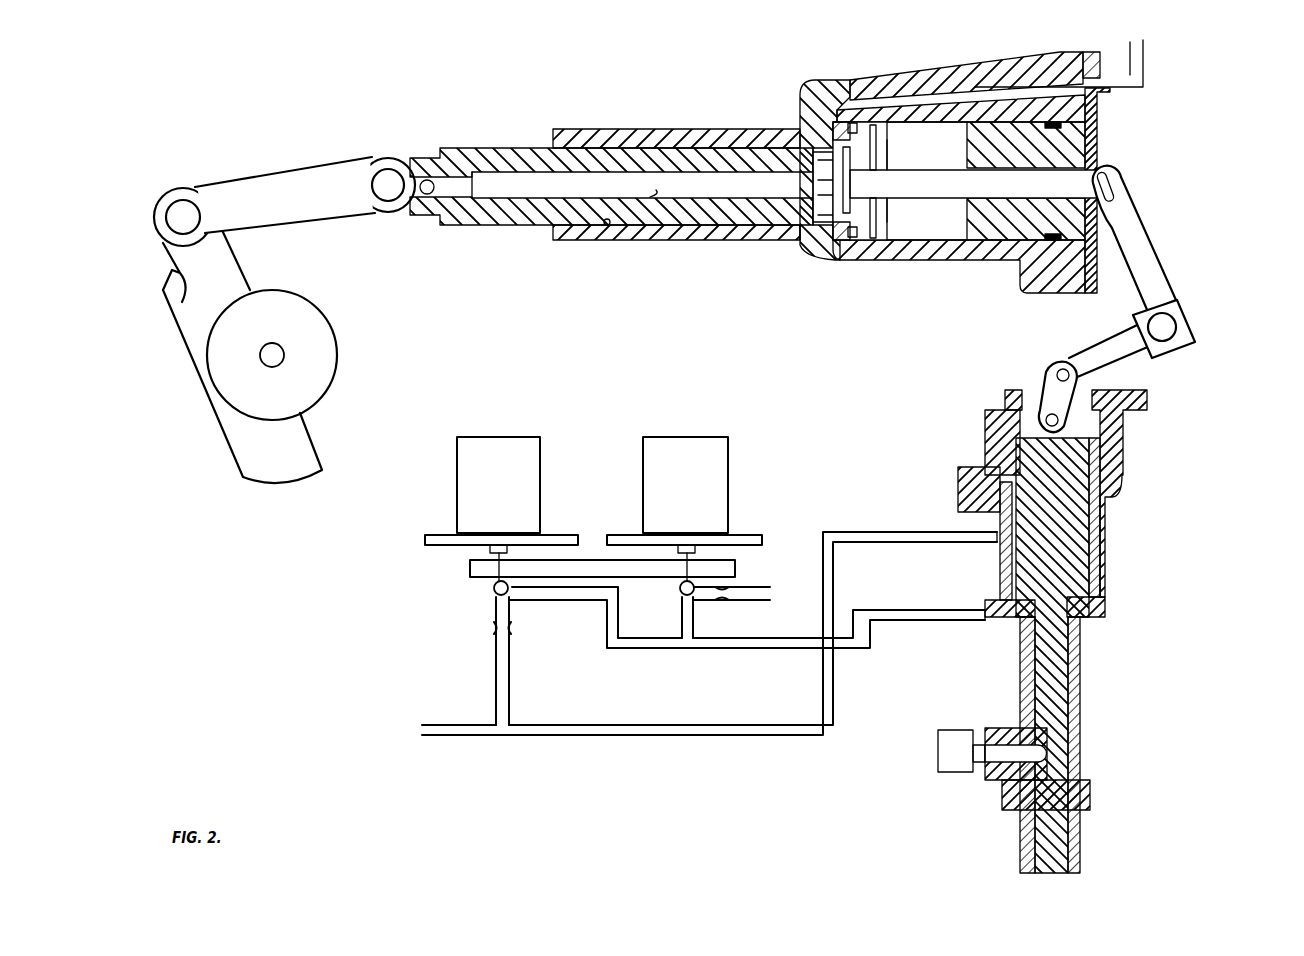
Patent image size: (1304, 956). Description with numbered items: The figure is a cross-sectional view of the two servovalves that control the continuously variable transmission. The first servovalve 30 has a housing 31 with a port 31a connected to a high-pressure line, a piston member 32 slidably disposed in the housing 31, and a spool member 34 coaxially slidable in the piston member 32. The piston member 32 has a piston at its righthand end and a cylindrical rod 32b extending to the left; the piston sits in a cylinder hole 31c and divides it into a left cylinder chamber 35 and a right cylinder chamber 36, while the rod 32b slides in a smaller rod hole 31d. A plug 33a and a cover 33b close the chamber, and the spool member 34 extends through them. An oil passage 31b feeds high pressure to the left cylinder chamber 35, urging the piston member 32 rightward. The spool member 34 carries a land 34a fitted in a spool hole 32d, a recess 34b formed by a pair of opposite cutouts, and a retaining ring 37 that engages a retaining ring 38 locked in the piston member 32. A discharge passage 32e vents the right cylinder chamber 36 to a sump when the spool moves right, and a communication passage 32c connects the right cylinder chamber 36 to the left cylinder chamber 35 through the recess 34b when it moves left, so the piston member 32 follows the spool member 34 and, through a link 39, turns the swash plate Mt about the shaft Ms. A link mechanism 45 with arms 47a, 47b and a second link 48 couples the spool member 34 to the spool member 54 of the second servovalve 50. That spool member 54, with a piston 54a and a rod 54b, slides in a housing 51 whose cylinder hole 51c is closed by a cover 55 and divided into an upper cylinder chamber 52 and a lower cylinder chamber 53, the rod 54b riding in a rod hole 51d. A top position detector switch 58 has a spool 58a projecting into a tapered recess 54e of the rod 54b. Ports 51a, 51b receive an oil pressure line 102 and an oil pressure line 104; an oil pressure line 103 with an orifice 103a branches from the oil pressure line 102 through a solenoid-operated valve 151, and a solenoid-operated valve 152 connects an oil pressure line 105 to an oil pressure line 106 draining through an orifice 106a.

The first servovalve 30 is at (712, 63).
The housing 31 is at (640, 128).
The port 31a is at (1117, 75).
The oil passage 31b is at (1000, 85).
The cylinder hole 31c is at (950, 240).
The rod hole 31d is at (606, 226).
The piston member 32 is at (483, 150).
The cylindrical rod 32b is at (478, 228).
The communication passage 32c is at (800, 140).
The spool hole 32d is at (657, 200).
The discharge passage 32e is at (800, 242).
The plug 33a is at (1080, 147).
The cover 33b is at (1097, 110).
The spool member 34 is at (927, 192).
The land 34a is at (773, 182).
The recess 34b is at (805, 128).
The left cylinder chamber 35 is at (818, 222).
The right cylinder chamber 36 is at (927, 181).
The retaining ring 37 is at (870, 235).
The retaining ring 38 is at (850, 228).
The link 39 is at (305, 185).
The link mechanism 45 is at (1205, 280).
The arm 47a is at (1145, 250).
The arm 47b is at (1140, 360).
The second link 48 is at (1048, 372).
The second servovalve 50 is at (1120, 625).
The housing 51 is at (1100, 572).
The port 51a is at (1000, 518).
The port 51b is at (990, 617).
The cylinder hole 51c is at (1105, 525).
The rod hole 51d is at (1062, 660).
The upper cylinder chamber 52 is at (1015, 548).
The lower cylinder chamber 53 is at (1000, 600).
The spool member 54 is at (1070, 545).
The piston 54a is at (1085, 582).
The rod 54b is at (1067, 690).
The recess 54e is at (1050, 778).
The cover 55 is at (995, 420).
The top position detector switch 58 is at (938, 752).
The spool 58a is at (995, 765).
The oil pressure line 102 is at (615, 736).
The oil pressure line 103 is at (496, 670).
The orifice 103a is at (511, 628).
The oil pressure line 104 is at (745, 650).
The oil pressure line 105 is at (682, 620).
The oil pressure line 106 is at (745, 590).
The orifice 106a is at (730, 600).
The solenoid-operated valve 151 is at (485, 440).
The solenoid-operated valve 152 is at (715, 440).
The shaft Ms is at (283, 355).
The swash plate Mt is at (285, 460).